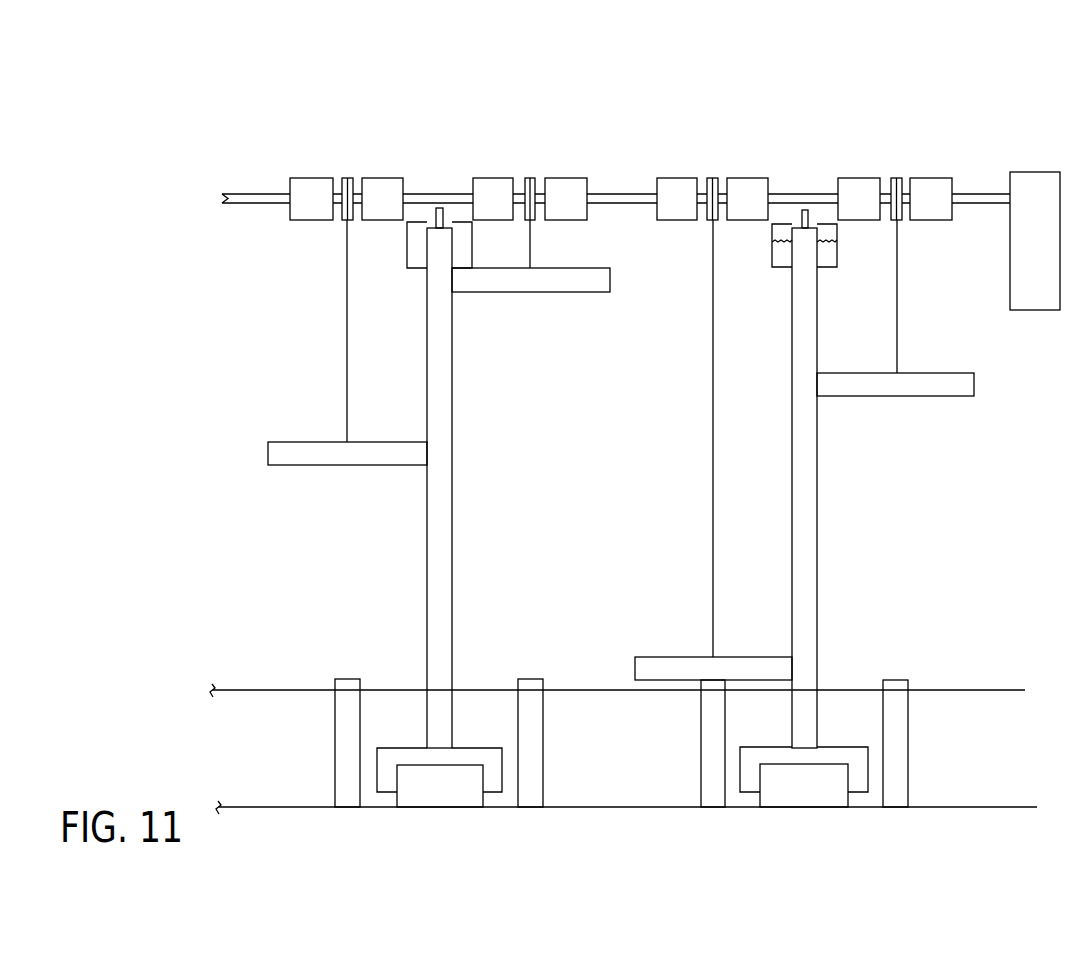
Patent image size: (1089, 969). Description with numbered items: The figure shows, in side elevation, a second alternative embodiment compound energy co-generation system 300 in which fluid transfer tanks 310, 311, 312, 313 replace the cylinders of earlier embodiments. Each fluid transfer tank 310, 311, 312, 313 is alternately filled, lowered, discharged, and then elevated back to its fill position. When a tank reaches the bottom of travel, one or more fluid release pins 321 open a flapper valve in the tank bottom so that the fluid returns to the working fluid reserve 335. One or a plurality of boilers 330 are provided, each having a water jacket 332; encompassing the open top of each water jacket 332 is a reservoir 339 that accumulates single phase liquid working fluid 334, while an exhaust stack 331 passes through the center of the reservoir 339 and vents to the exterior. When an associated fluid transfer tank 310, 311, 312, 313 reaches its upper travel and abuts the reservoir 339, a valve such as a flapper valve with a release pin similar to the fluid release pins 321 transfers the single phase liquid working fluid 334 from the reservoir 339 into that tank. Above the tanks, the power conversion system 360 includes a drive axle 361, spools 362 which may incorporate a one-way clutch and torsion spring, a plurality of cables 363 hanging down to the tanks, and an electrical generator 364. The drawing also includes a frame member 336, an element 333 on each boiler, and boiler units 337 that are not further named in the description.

The compound energy co-generation system 300 is at (973, 125).
The fluid transfer tank 310 is at (947, 371).
The fluid transfer tank 311 is at (665, 656).
The fluid transfer tank 312 is at (571, 294).
The fluid transfer tank 313 is at (360, 468).
The fluid release pin 321 is at (343, 735).
The boiler 330 is at (632, 475).
The exhaust stack 331 is at (807, 206).
The water jacket 332 is at (830, 748).
The actuator rod 333 is at (440, 575).
The single phase liquid working fluid 334 is at (833, 268).
The working fluid reserve 335 is at (626, 785).
The frame member 336 is at (1006, 690).
The actuator motor 337 is at (622, 785).
The reservoir 339 is at (411, 258).
The power conversion system 360 is at (438, 190).
The drive axle 361 is at (665, 187).
The spool 362 is at (553, 178).
The cable 363 is at (531, 248).
The electrical generator 364 is at (1035, 241).